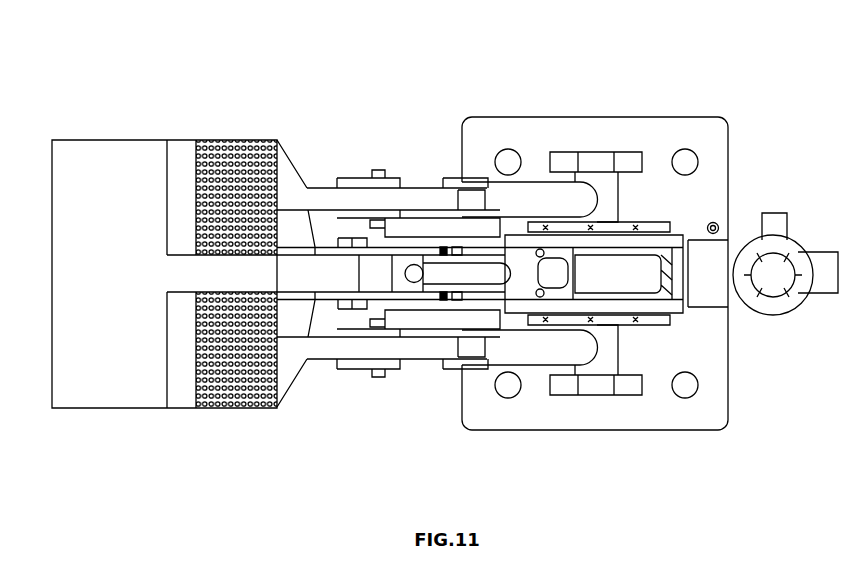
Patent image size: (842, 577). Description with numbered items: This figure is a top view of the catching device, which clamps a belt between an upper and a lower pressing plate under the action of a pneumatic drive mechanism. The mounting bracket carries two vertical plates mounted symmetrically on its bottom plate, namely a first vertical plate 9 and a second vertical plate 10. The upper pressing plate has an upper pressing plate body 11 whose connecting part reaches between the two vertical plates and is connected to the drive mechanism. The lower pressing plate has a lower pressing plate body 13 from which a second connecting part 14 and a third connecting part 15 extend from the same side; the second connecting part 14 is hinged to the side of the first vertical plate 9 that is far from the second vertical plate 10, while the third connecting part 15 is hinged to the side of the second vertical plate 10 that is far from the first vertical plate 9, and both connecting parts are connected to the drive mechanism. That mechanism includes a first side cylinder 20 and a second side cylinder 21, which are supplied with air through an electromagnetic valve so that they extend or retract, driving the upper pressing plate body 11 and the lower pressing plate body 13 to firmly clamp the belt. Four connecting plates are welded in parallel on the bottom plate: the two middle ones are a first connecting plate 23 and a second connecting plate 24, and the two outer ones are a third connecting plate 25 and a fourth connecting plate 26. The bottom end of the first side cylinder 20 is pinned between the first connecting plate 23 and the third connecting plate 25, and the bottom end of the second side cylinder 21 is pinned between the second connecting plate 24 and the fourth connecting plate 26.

The first vertical plate 9 is at (427, 318).
The second vertical plate 10 is at (439, 231).
The upper pressing plate body 11 is at (90, 172).
The lower pressing plate body 13 is at (233, 140).
The second connecting part 14 is at (408, 350).
The third connecting part 15 is at (407, 200).
The first side cylinder 20 is at (527, 347).
The second side cylinder 21 is at (522, 203).
The first connecting plate 23 is at (647, 313).
The second connecting plate 24 is at (666, 244).
The third connecting plate 25 is at (599, 387).
The fourth connecting plate 26 is at (604, 172).